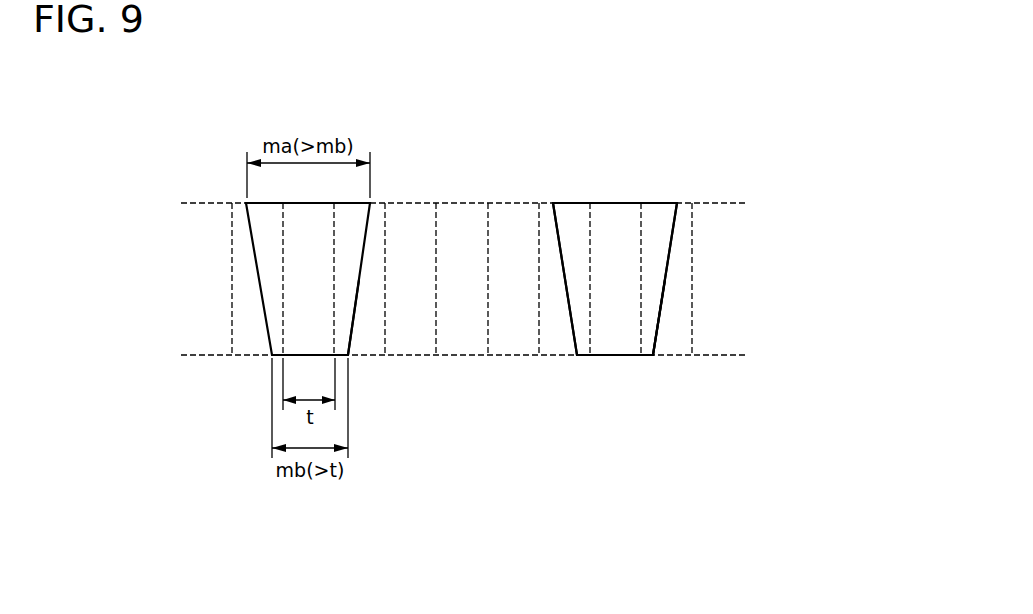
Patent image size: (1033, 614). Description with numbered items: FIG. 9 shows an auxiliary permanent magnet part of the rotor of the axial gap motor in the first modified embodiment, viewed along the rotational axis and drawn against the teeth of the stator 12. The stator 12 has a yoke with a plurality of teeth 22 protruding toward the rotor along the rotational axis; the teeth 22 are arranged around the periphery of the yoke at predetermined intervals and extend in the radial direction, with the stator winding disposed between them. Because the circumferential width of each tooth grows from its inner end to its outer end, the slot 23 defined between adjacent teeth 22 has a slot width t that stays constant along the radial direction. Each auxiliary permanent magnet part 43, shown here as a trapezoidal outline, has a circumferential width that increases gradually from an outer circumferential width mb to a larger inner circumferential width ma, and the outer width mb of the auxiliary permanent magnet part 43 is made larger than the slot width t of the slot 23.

The stator 12 is at (735, 196).
The teeth 22 is at (545, 215).
The slot 23 is at (317, 278).
The auxiliary permanent magnet part 43 is at (353, 328).